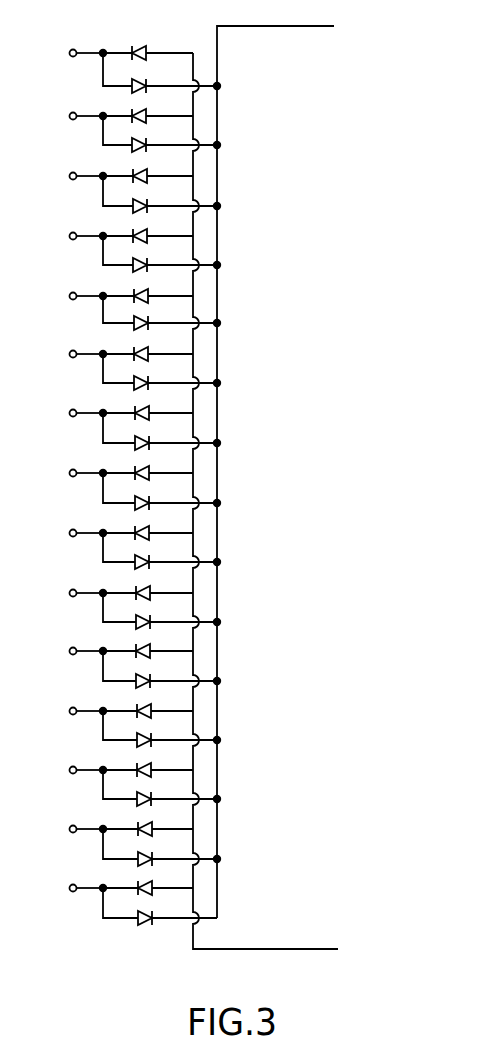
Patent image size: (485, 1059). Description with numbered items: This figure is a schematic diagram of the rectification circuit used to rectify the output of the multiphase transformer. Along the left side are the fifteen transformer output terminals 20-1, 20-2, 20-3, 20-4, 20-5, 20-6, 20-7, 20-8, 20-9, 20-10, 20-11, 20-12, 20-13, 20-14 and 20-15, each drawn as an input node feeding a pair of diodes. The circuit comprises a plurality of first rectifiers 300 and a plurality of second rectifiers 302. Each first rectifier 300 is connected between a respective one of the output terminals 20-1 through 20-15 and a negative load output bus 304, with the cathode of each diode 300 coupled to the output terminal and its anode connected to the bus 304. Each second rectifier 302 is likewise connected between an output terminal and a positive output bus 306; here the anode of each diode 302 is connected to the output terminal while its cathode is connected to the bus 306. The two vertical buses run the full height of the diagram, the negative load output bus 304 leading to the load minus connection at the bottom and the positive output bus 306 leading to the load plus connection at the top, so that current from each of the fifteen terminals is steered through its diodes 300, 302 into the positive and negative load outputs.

The output terminal 20-1 is at (68, 53).
The output terminal 20-2 is at (67, 116).
The output terminal 20-3 is at (67, 176).
The output terminal 20-4 is at (67, 236).
The output terminal 20-5 is at (67, 296).
The output terminal 20-6 is at (67, 354).
The output terminal 20-7 is at (67, 413).
The output terminal 20-8 is at (67, 473).
The output terminal 20-9 is at (67, 533).
The output terminal 20-10 is at (64, 593).
The output terminal 20-11 is at (65, 651).
The output terminal 20-12 is at (64, 711).
The output terminal 20-13 is at (64, 770).
The output terminal 20-14 is at (63, 829).
The output terminal 20-15 is at (63, 888).
The first rectifier 300 is at (137, 47).
The second rectifier 302 is at (131, 88).
The negative load output bus 304 is at (268, 949).
The positive output bus 306 is at (280, 27).